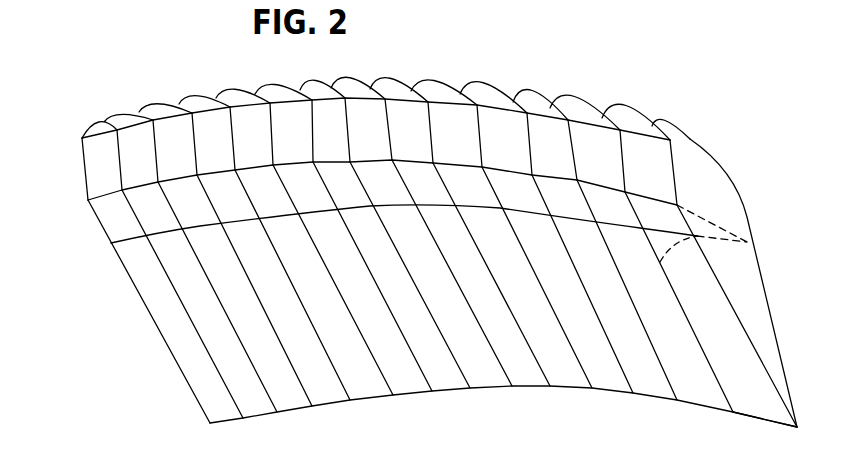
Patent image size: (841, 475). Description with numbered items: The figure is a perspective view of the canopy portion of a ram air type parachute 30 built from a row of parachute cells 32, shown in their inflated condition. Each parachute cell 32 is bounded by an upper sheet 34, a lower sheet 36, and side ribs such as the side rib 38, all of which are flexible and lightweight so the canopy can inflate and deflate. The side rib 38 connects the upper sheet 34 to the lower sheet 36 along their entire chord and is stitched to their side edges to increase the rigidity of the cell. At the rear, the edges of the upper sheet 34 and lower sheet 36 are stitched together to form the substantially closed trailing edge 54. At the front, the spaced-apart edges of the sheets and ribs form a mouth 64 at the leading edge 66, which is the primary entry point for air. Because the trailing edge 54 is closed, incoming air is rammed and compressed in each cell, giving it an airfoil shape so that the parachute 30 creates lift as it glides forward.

The ram air type parachute 30 is at (520, 386).
The parachute cell 32 is at (685, 408).
The upper sheet 34 is at (675, 132).
The lower sheet 36 is at (693, 380).
The side rib 38 is at (753, 281).
The trailing edge 54 is at (618, 397).
The mouth 64 is at (665, 175).
The leading edge 66 is at (79, 144).